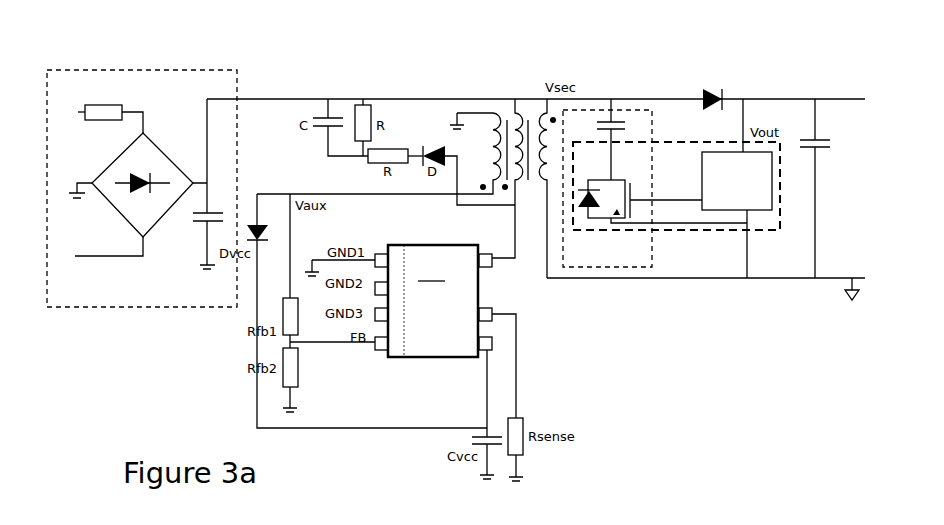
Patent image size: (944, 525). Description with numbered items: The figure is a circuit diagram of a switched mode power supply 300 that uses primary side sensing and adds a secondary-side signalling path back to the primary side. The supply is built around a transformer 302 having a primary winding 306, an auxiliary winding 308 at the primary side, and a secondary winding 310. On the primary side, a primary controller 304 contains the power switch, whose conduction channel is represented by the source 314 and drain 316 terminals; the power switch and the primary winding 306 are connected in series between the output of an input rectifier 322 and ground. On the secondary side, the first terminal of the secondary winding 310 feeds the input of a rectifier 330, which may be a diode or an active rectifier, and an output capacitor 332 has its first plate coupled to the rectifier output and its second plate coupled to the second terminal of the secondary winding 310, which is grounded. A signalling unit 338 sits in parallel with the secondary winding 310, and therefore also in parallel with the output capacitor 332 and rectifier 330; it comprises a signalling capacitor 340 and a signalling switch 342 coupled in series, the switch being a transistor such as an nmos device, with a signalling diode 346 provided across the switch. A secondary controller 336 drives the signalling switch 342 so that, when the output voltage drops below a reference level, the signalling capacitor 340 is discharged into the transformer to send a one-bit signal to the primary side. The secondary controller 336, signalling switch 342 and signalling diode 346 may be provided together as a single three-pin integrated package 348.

The switched mode power supply 300 is at (378, 54).
The transformer 302 is at (406, 146).
The primary controller 304 is at (512, 331).
The primary winding 306 is at (514, 116).
The auxiliary winding 308 is at (494, 116).
The secondary winding 310 is at (546, 111).
The source 314 is at (494, 261).
The drain 316 is at (494, 317).
The rectifier 322 is at (236, 68).
The rectifier 330 is at (699, 92).
The output capacitor 332 is at (810, 138).
The secondary controller 336 is at (712, 211).
The signalling unit 338 is at (641, 108).
The signalling capacitor 340 is at (601, 120).
The signalling switch 342 is at (630, 219).
The signalling diode 346 is at (582, 207).
The 3-pin integrated package 348 is at (673, 231).